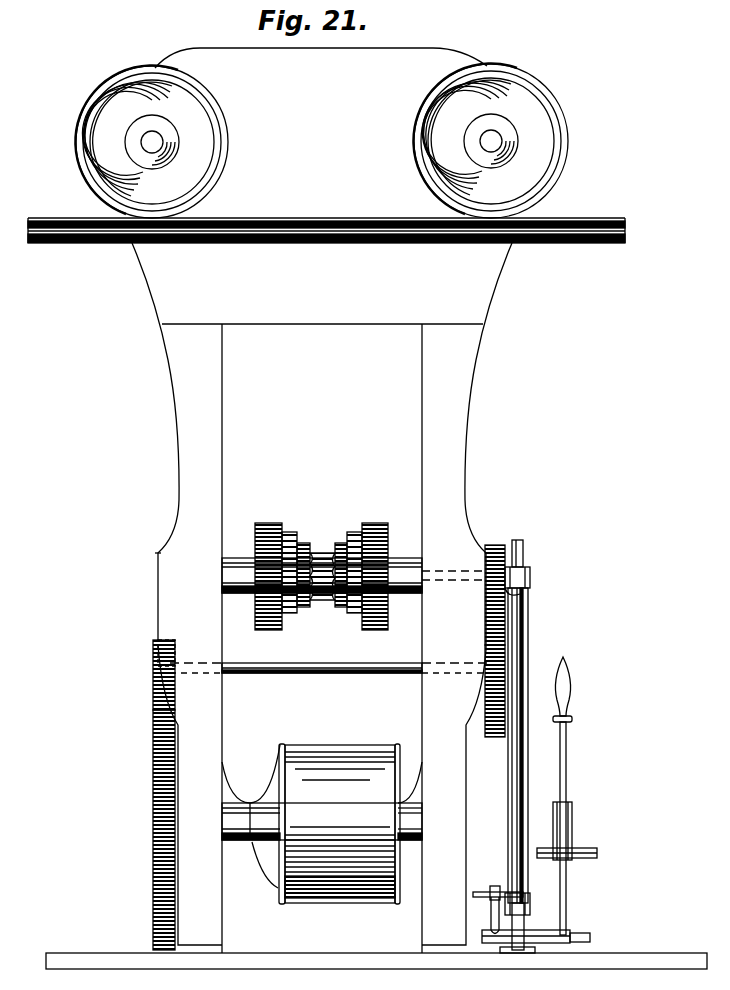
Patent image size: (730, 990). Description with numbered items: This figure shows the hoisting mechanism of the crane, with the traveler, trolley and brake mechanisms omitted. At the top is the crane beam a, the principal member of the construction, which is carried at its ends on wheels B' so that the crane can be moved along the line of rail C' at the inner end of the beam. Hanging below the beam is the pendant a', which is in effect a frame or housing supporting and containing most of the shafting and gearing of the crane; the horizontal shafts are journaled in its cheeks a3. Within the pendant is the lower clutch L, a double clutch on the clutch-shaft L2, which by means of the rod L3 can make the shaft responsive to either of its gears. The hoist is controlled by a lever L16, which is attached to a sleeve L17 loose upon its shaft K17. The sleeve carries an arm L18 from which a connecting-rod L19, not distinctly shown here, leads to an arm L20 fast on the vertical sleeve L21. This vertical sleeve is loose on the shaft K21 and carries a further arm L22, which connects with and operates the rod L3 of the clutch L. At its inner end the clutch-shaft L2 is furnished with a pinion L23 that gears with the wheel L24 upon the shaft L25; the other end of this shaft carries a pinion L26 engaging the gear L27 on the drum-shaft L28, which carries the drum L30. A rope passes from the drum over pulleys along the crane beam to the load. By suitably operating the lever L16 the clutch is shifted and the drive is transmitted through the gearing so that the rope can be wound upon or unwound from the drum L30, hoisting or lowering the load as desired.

The beam a is at (321, 78).
The wheel B' is at (335, 140).
The line of rail C' is at (338, 221).
The pendant a' is at (322, 594).
The cheeks of the pendant a3 is at (322, 638).
The lower clutch L is at (321, 572).
The clutch-shaft L2 is at (410, 590).
The clutch rod L3 is at (522, 596).
The lever L16 is at (566, 770).
The sleeve L17 is at (526, 929).
The shaft K17 is at (593, 938).
The arm L18 is at (495, 915).
The connecting-rod L19 is at (496, 887).
The arm L20 is at (528, 900).
The vertical sleeve L21 is at (508, 828).
The shaft K21 is at (532, 553).
The arm L22 is at (532, 578).
The pinion L23 is at (496, 582).
The wheel L24 is at (494, 699).
The shaft L25 is at (350, 674).
The pinion L26 is at (153, 675).
The gear L27 is at (153, 830).
The drum-shaft L28 is at (246, 840).
The drum L30 is at (339, 824).